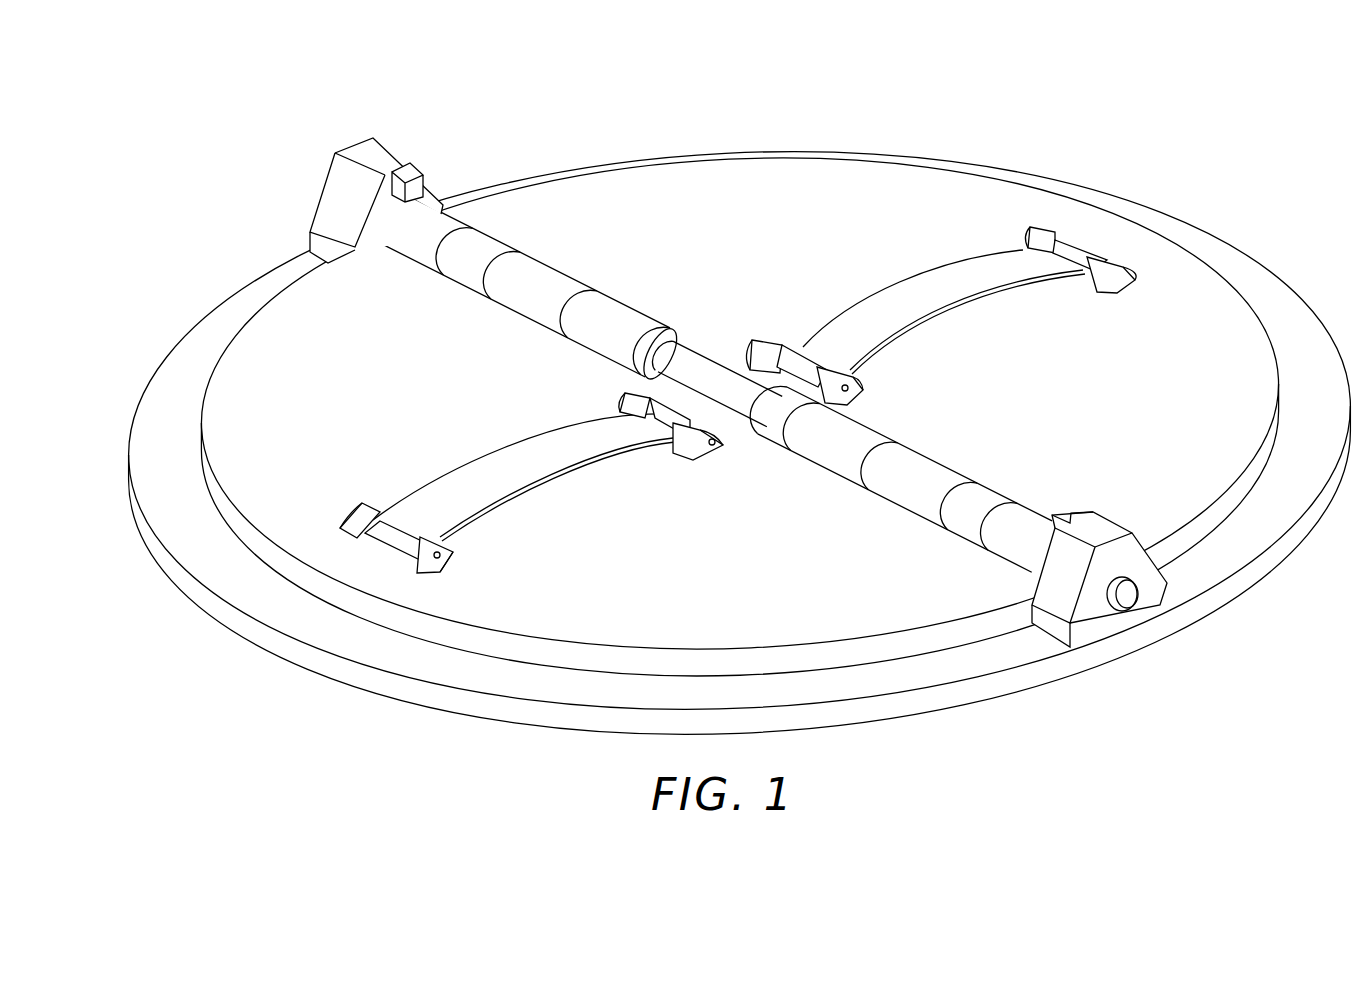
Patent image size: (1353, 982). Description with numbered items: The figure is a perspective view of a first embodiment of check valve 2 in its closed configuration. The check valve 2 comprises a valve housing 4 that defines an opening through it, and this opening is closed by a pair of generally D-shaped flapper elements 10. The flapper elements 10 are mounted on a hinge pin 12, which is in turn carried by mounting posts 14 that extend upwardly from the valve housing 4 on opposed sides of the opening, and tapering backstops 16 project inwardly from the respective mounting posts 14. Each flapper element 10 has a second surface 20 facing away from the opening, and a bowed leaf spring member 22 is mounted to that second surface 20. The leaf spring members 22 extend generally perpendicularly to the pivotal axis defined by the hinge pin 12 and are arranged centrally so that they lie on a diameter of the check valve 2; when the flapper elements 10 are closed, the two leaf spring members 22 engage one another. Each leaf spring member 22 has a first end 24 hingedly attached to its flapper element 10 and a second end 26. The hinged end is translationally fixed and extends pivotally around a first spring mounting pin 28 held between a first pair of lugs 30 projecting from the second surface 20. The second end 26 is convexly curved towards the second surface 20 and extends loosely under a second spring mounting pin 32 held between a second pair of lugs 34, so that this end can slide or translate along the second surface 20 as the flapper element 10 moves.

The check valve 2 is at (718, 422).
The valve housing 4 is at (397, 690).
The flapper elements 10 is at (872, 178).
The hinge pin 12 is at (717, 375).
The mounting posts 14 is at (332, 200).
The tapering backstops 16 is at (400, 165).
The second surface 20 is at (1207, 290).
The bowed leaf spring member 22 is at (927, 282).
The first end 24 is at (657, 397).
The second end 26 is at (1095, 250).
The first spring mounting pin 28 is at (848, 392).
The first pair of lugs 30 is at (760, 340).
The second spring mounting pin 32 is at (440, 556).
The second pair of lugs 34 is at (358, 512).